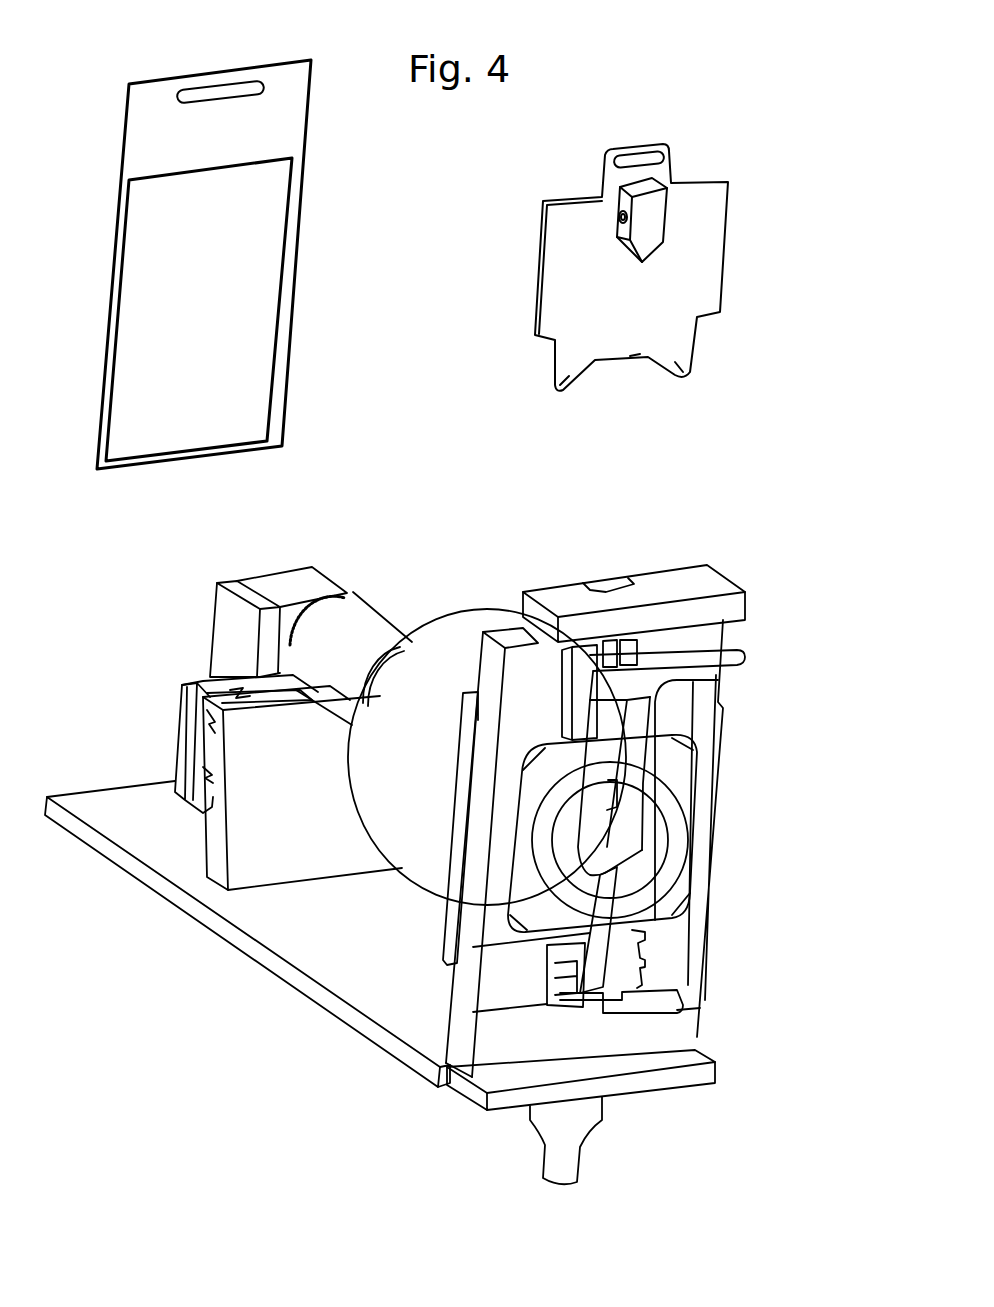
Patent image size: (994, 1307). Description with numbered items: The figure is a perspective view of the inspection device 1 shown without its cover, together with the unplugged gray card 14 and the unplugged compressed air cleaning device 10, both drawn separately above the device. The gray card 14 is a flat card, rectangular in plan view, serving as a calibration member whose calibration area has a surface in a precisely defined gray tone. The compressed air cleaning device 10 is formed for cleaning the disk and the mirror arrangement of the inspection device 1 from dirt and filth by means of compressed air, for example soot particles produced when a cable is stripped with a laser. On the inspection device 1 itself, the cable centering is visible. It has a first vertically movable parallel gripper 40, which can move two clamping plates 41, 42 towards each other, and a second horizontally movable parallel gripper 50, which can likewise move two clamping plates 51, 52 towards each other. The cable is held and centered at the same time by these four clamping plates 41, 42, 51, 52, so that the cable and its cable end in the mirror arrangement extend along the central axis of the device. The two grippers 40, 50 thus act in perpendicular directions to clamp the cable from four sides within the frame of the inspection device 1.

The inspection device 1 is at (447, 556).
The compressed air cleaning device 10 is at (697, 193).
The gray card 14 is at (151, 94).
The first vertically movable parallel gripper 40 is at (635, 650).
The clamping plate 41 is at (612, 740).
The clamping plate 42 is at (640, 780).
The second horizontally movable parallel gripper 50 is at (613, 1002).
The clamping plate 51 is at (627, 928).
The clamping plate 52 is at (598, 977).